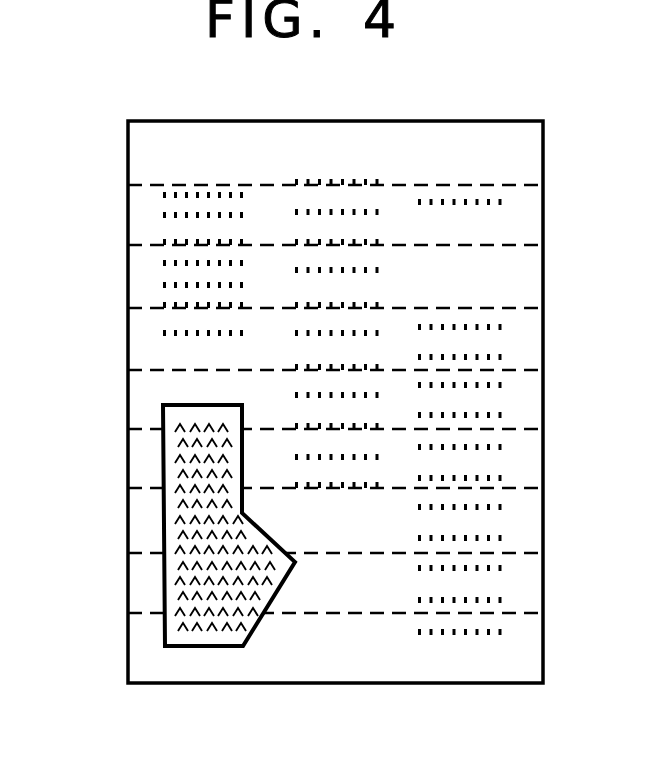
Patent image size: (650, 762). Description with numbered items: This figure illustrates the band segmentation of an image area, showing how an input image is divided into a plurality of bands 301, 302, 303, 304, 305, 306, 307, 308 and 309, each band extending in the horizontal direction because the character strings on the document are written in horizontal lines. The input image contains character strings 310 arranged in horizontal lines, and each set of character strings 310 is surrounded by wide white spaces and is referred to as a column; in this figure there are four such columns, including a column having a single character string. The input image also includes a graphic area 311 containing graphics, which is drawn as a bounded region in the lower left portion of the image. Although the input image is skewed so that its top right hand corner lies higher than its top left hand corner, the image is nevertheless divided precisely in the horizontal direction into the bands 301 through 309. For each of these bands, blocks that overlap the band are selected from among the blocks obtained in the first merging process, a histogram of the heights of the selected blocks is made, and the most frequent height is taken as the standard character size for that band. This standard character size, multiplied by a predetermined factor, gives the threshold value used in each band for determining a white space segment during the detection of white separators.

The band 301 is at (128, 162).
The band 302 is at (128, 221).
The band 303 is at (128, 281).
The band 304 is at (128, 342).
The band 305 is at (128, 387).
The band 306 is at (128, 448).
The band 307 is at (128, 511).
The band 308 is at (128, 572).
The band 309 is at (128, 632).
The character strings 310 is at (320, 185).
The graphic area 311 is at (203, 646).